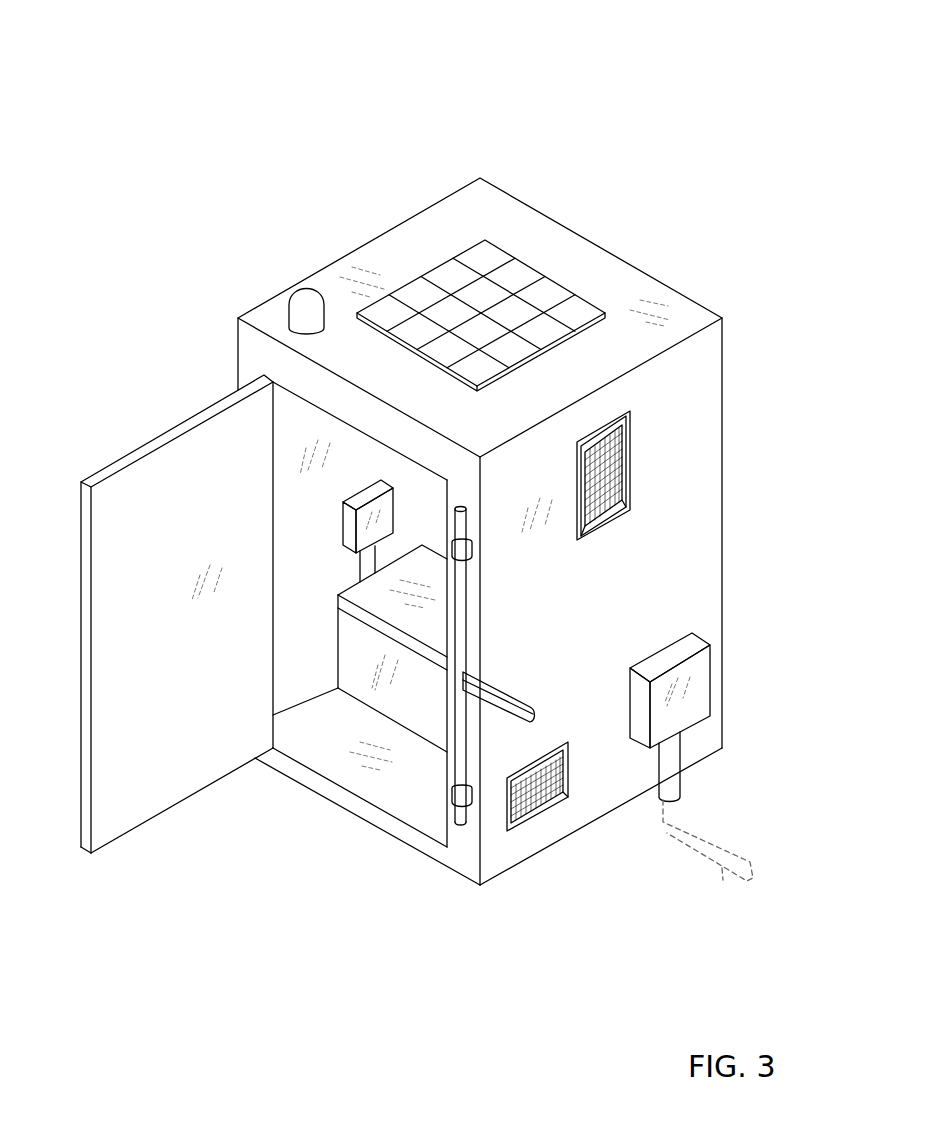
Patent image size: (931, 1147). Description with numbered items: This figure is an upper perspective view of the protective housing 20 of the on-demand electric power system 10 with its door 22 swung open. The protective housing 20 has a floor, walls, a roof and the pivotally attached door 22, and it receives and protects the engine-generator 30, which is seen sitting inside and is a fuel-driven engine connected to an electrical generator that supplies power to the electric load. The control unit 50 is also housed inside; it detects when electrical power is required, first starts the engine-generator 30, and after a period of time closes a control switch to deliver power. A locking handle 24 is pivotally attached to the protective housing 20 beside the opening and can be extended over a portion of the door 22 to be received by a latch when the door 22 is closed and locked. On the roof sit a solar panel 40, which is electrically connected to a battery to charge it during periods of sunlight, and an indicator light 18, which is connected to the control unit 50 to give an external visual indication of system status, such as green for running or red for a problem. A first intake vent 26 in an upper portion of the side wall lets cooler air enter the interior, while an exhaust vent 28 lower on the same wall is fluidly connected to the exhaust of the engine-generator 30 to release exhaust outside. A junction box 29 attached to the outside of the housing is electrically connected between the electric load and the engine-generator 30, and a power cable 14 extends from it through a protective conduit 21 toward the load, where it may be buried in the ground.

The on-demand electric power system 10 is at (254, 149).
The power cable 14 is at (723, 868).
The indicator light 18 is at (300, 322).
The protective housing 20 is at (690, 293).
The protective conduit 21 is at (682, 748).
The door 22 is at (174, 471).
The locking handle 24 is at (509, 710).
The first intake vent 26 is at (617, 472).
The exhaust vent 28 is at (528, 806).
The junction box 29 is at (703, 668).
The engine-generator 30 is at (357, 682).
The solar panel 40 is at (528, 278).
The control unit 50 is at (352, 527).